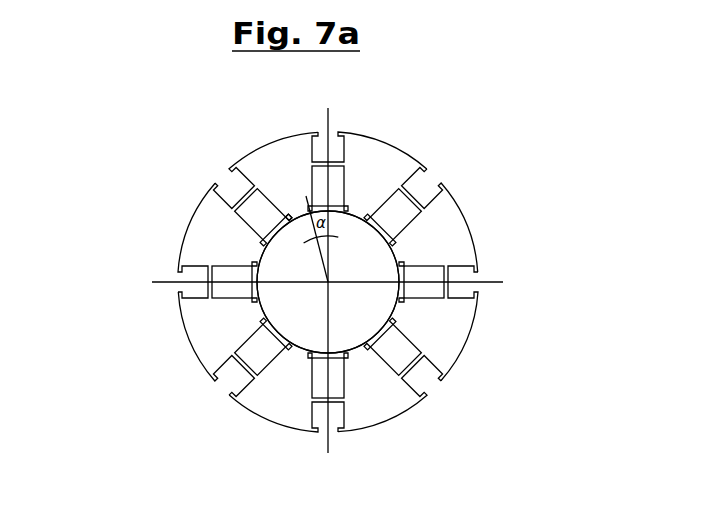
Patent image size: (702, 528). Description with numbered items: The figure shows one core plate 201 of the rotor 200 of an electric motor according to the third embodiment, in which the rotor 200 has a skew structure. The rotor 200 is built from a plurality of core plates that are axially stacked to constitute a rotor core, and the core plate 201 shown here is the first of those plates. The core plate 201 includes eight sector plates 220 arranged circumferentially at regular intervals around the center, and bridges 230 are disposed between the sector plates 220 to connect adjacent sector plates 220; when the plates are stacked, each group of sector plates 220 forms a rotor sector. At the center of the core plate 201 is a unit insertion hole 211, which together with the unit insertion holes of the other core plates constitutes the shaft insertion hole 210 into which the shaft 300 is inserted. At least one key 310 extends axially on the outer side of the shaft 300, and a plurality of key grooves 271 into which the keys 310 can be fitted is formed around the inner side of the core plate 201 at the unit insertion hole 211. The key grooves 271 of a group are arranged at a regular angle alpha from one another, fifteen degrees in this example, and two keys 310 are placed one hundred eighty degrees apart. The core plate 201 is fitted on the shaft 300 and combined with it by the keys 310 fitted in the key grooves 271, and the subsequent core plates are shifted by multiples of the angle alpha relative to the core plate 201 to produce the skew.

The rotor 200 is at (292, 277).
The core plate 201 is at (292, 282).
The shaft insertion hole 210 is at (358, 212).
The unit insertion hole 211 is at (358, 212).
The sector plate 220 is at (192, 227).
The bridge 230 is at (211, 300).
The key groove 271 is at (291, 347).
The shaft 300 is at (382, 305).
The key 310 is at (330, 358).